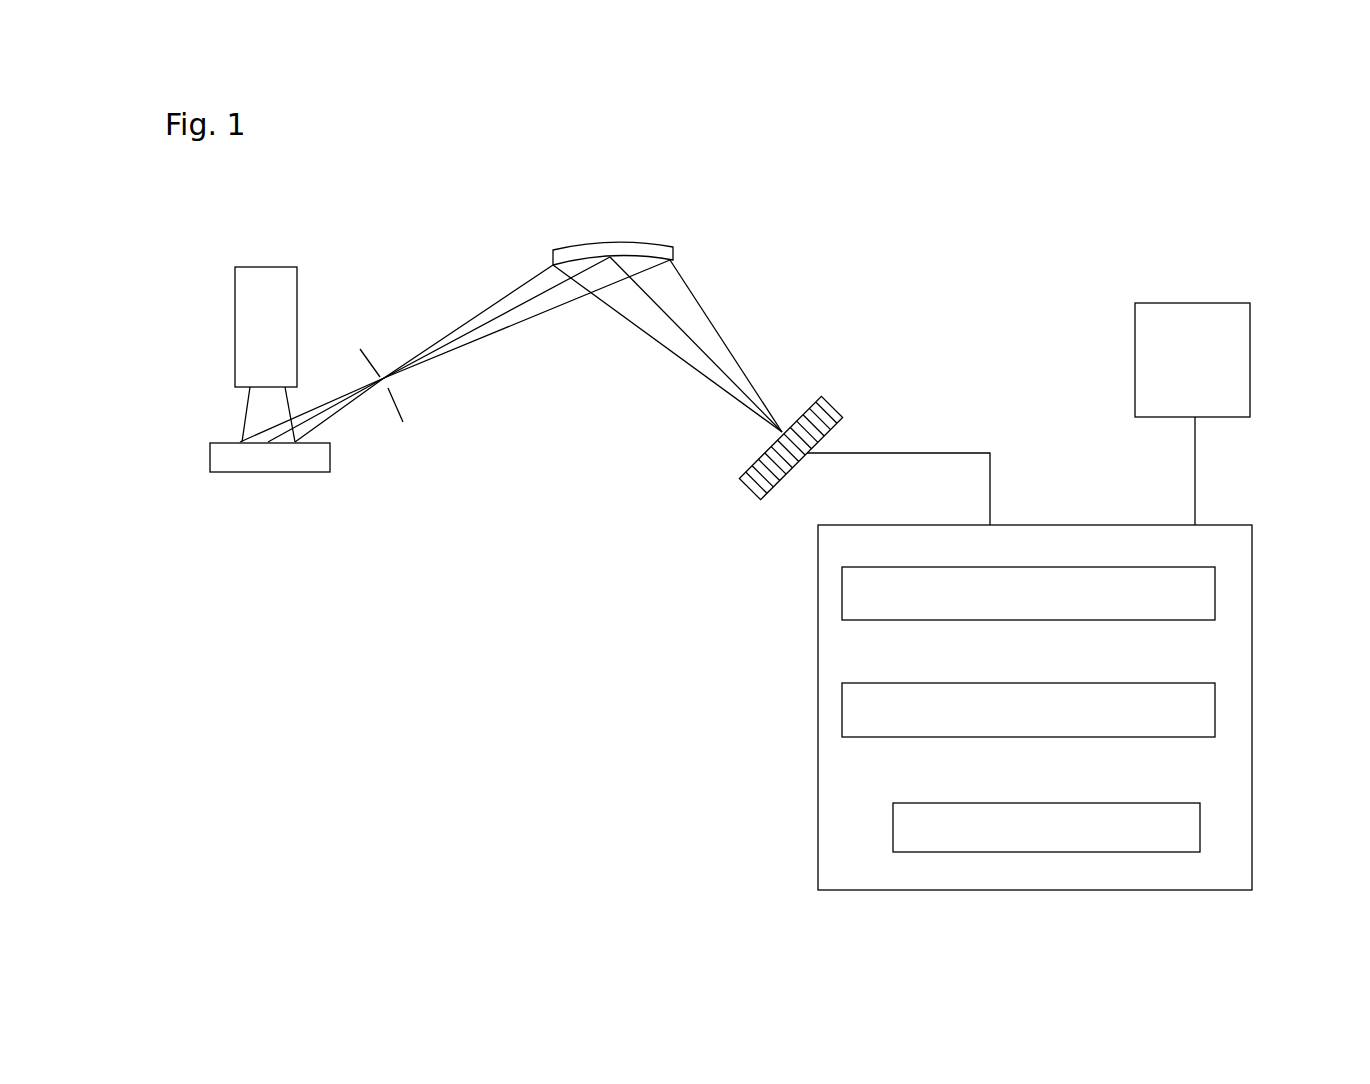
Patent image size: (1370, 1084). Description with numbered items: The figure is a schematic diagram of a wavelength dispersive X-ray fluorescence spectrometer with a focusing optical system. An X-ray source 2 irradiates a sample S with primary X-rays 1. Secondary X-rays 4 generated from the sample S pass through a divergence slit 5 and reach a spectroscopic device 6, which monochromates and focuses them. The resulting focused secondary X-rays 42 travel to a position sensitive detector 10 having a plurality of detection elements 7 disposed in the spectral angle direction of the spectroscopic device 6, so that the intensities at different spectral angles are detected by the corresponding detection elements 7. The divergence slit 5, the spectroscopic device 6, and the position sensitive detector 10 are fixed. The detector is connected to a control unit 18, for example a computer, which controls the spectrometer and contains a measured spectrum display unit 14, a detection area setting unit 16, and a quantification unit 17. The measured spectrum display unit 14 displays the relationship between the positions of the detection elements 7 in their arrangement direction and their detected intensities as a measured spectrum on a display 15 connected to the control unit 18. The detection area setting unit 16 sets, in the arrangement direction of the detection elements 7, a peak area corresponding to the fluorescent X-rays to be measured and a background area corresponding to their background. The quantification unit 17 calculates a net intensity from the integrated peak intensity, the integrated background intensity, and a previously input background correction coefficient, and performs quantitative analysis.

The primary X-rays 1 is at (244, 410).
The X-ray source 2 is at (268, 267).
The sample S is at (273, 474).
The secondary X-rays 4 is at (348, 410).
The divergence slit 5 is at (367, 357).
The spectroscopic device 6 is at (622, 245).
The focused secondary X-rays 42 is at (719, 326).
The detection elements 7 is at (756, 462).
The position sensitive detector 10 is at (838, 410).
The display 15 is at (1182, 303).
The control unit 18 is at (1252, 628).
The measured spectrum display unit 14 is at (842, 590).
The detection area setting unit 16 is at (842, 710).
The quantification unit 17 is at (893, 830).